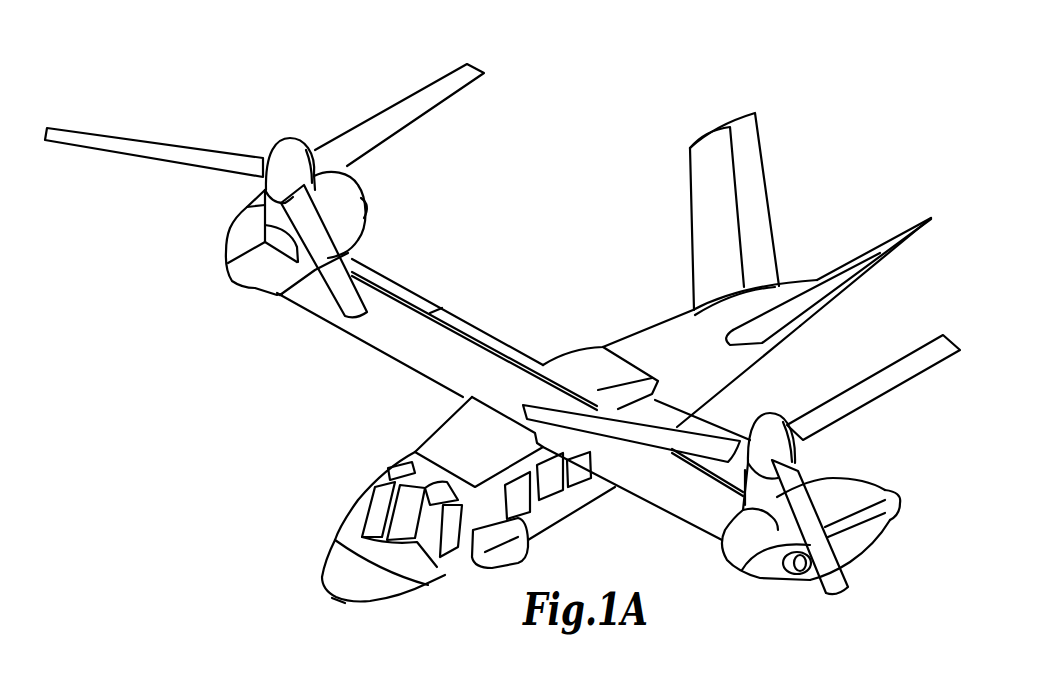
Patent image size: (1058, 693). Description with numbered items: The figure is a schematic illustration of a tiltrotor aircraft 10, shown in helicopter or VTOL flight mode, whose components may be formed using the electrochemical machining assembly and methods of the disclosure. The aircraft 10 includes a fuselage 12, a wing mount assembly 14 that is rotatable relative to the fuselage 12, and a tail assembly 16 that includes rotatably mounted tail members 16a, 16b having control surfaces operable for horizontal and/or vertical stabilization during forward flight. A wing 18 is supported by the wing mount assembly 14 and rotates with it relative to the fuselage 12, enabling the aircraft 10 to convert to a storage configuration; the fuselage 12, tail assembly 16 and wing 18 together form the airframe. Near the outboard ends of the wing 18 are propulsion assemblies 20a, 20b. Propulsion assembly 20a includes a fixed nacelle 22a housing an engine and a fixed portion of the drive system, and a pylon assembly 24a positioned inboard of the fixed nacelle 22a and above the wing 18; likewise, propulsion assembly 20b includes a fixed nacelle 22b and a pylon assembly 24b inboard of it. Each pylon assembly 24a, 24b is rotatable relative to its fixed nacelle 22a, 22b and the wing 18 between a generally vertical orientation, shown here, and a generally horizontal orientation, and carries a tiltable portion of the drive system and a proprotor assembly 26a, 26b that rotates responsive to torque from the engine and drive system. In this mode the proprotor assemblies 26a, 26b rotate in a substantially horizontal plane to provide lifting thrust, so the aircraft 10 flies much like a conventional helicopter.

The tiltrotor aircraft 10 is at (540, 238).
The fuselage 12 is at (648, 335).
The wing mount assembly 14 is at (575, 370).
The tail assembly 16 is at (768, 175).
The tail member 16a is at (828, 270).
The tail member 16b is at (714, 148).
The wing 18 is at (447, 333).
The propulsion assembly 20a is at (862, 478).
The propulsion assembly 20b is at (368, 227).
The fixed nacelle 22a is at (862, 535).
The fixed nacelle 22b is at (347, 186).
The pylon assembly 24a is at (753, 490).
The pylon assembly 24b is at (268, 208).
The proprotor assembly 26a is at (877, 380).
The proprotor assembly 26b is at (416, 105).